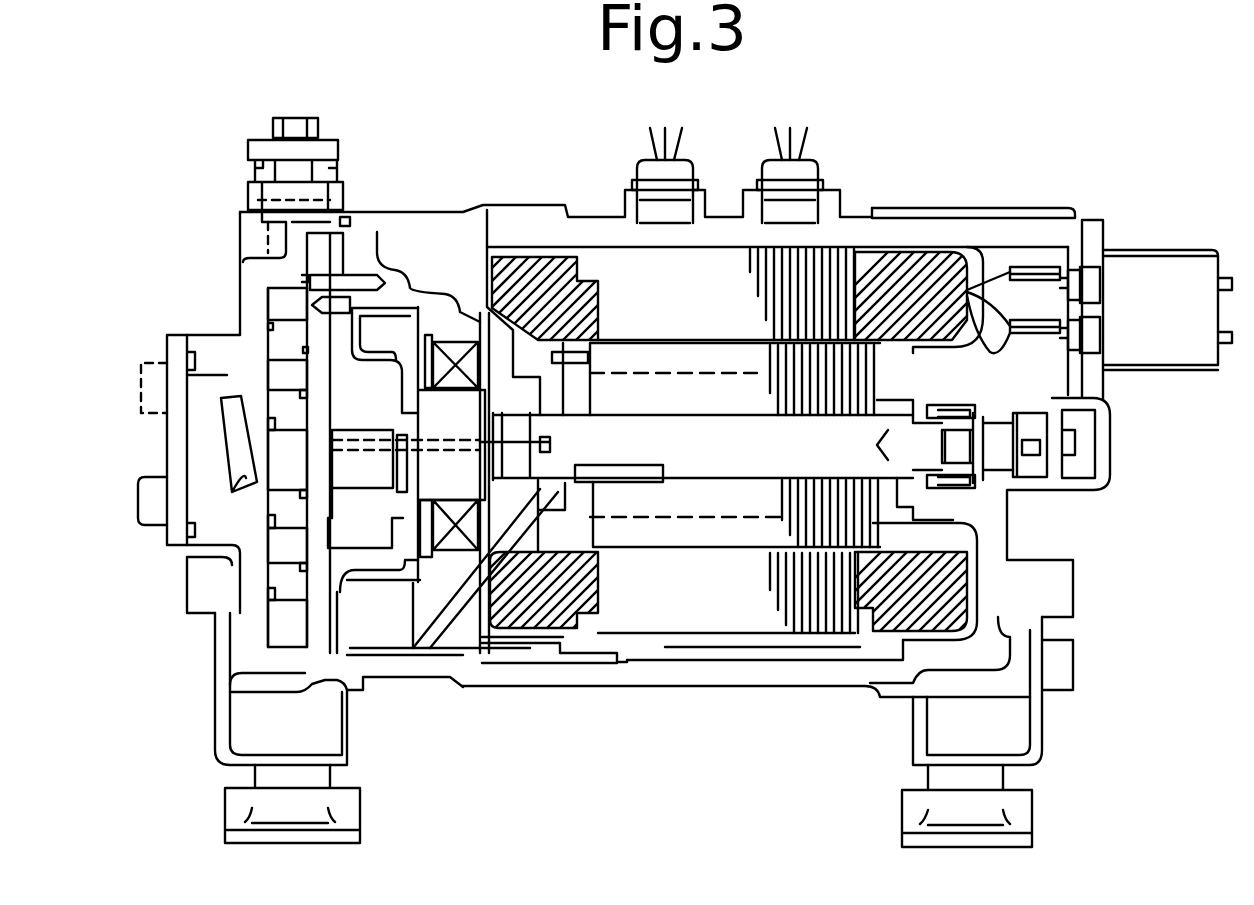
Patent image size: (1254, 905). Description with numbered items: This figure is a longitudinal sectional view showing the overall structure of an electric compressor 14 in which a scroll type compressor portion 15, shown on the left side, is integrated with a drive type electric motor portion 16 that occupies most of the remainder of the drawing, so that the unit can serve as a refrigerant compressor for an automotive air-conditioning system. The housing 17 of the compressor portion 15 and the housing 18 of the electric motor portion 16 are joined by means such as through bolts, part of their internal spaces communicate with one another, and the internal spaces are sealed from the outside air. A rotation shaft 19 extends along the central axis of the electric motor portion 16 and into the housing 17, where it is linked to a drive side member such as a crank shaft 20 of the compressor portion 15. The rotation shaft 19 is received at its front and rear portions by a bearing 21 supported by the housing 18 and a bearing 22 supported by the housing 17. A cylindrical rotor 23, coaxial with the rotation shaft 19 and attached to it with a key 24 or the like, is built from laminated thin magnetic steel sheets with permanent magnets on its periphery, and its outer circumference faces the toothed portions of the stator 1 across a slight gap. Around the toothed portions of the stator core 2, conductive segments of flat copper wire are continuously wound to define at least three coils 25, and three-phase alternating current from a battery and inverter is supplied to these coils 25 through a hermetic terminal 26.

The stator 1 is at (639, 526).
The stator core 2 is at (688, 627).
The electric compressor 14 is at (490, 710).
The compressor portion 15 is at (214, 284).
The electric motor portion 16 is at (577, 193).
The housing 17 is at (380, 232).
The housing 18 is at (892, 228).
The rotation shaft 19 is at (762, 450).
The crank shaft 20 is at (407, 485).
The bearing 21 is at (967, 484).
The bearing 22 is at (455, 350).
The rotor 23 is at (725, 533).
The key 24 is at (623, 475).
The coil 25 is at (940, 267).
The hermetic terminal 26 is at (1075, 366).